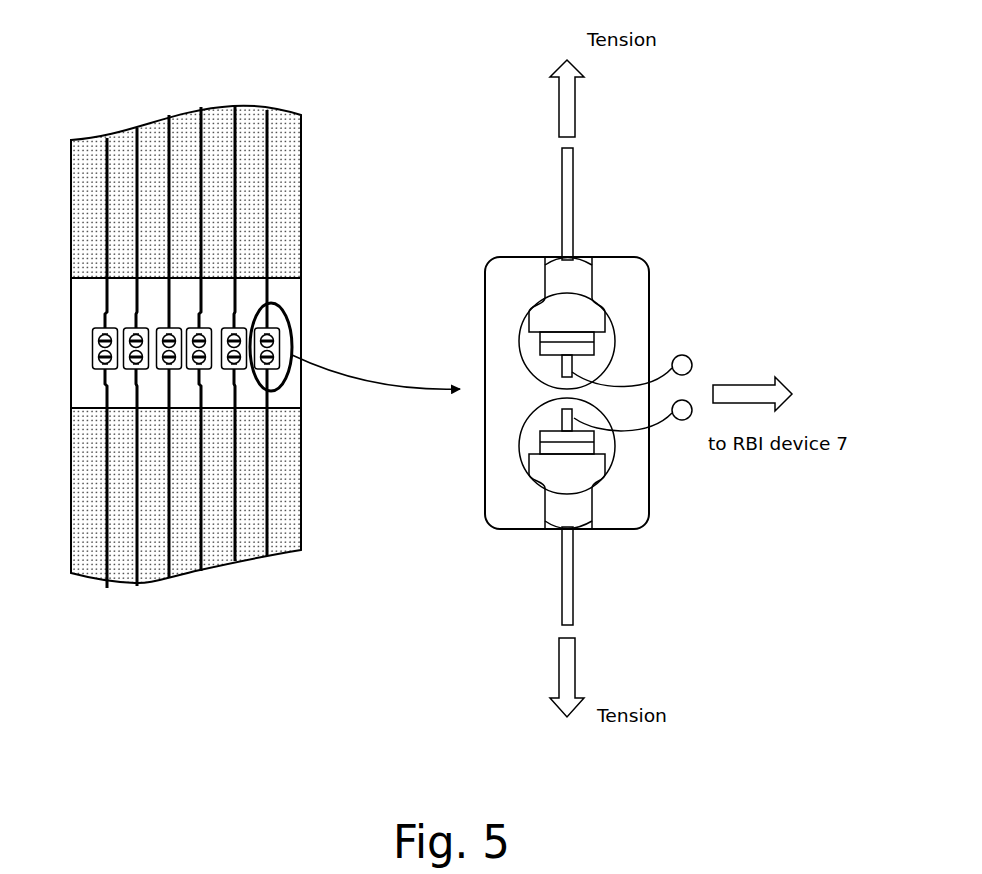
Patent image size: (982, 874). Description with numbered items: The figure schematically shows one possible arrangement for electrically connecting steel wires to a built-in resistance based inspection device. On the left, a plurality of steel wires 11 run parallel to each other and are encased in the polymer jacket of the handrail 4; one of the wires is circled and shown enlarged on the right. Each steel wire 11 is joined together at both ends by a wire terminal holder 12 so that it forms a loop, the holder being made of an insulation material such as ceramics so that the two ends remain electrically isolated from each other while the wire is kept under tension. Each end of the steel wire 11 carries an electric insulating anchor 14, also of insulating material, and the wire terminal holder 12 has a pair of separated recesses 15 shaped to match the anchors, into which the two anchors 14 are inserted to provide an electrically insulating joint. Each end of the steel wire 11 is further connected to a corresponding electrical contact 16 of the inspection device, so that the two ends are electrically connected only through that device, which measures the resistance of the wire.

The handrail 4 is at (286, 210).
The steel wire 11 is at (136, 597).
The wire terminal holder 12 is at (517, 256).
The electric insulating anchor 14 is at (577, 300).
The recess 15 is at (518, 340).
The electrical contact 16 is at (682, 355).